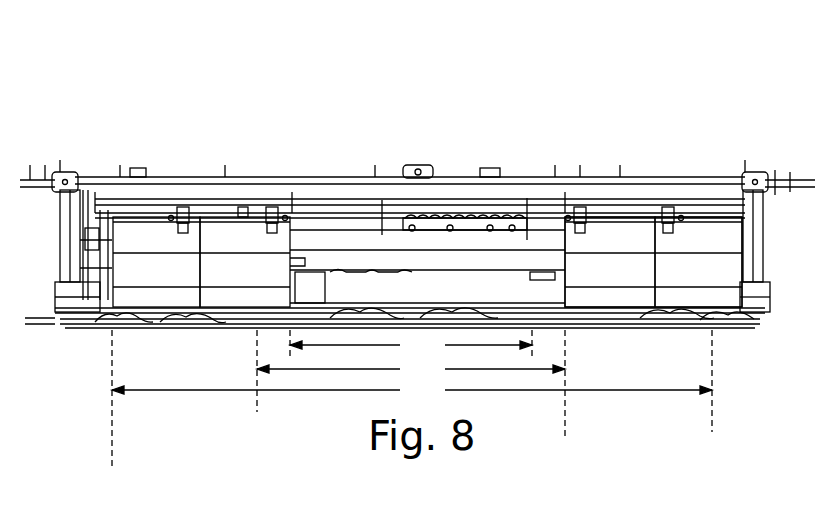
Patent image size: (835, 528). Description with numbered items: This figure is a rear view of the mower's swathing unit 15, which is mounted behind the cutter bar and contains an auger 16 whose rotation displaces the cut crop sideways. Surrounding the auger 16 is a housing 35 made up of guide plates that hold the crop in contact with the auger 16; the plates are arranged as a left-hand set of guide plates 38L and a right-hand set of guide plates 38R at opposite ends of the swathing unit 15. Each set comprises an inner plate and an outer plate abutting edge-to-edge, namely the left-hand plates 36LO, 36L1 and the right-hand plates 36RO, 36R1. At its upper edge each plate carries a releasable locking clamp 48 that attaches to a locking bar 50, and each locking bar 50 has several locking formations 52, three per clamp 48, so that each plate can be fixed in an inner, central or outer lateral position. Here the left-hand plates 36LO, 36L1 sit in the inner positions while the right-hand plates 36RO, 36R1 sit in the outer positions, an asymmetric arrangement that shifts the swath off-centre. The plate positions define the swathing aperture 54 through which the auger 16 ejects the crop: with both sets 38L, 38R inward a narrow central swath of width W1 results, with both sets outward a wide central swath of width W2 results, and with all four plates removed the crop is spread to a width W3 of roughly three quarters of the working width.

The swathing unit 15 is at (563, 86).
The auger 16 is at (461, 262).
The housing 35 is at (703, 243).
The left-hand outer guide plate 36LO is at (153, 296).
The left-hand inner guide plate 36L1 is at (245, 294).
The right-hand inner guide plate 36R1 is at (595, 296).
The right-hand outer guide plate 36RO is at (722, 303).
The left-hand set of guide plates 38L is at (260, 446).
The right-hand set of guide plates 38R is at (713, 418).
The releasable locking clamp 48 is at (184, 207).
The locking bar 50 is at (122, 205).
The locking formations 52 is at (243, 207).
The swathing aperture 54 is at (378, 226).
The narrow swath width W1 is at (411, 343).
The wide swath width W2 is at (411, 370).
The swath width with guide plates removed W3 is at (412, 391).